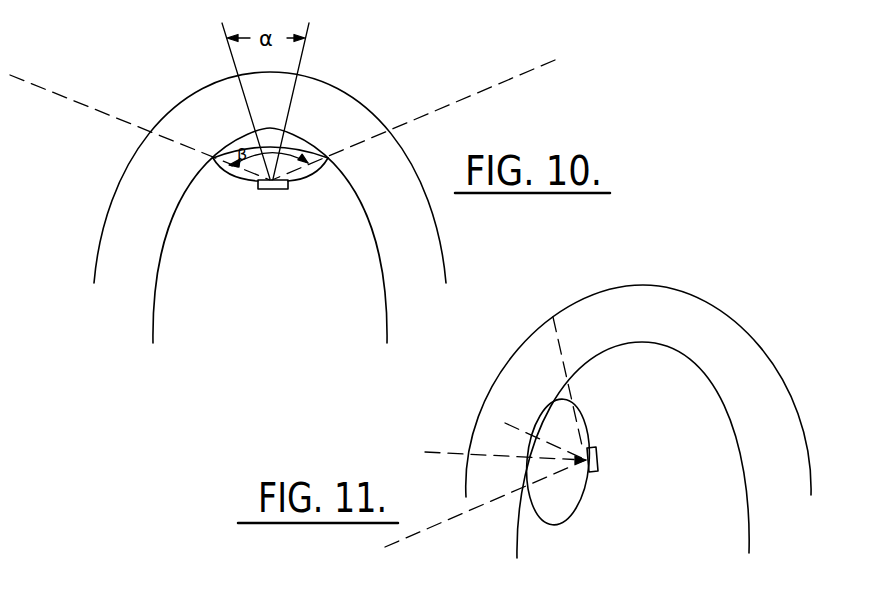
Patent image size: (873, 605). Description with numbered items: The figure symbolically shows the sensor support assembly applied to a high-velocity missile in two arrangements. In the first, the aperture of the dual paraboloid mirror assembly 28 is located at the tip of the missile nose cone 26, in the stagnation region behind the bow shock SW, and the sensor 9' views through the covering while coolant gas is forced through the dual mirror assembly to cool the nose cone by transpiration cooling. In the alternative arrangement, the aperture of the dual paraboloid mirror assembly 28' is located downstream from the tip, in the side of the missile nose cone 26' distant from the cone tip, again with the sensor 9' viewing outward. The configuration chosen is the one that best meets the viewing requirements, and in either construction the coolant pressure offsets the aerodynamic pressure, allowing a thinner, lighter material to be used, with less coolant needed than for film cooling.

In FIG. 10, the bow shock SW is at (118, 188).
In FIG. 11, the bow shock SW is at (625, 285).
In FIG. 10, the missile nose cone 26 is at (250, 235).
In FIG. 10, the dual paraboloid mirror assembly 28 is at (256, 202).
In FIG. 10, the sensor 9' is at (260, 204).
In FIG. 11, the sensor 9' is at (611, 468).
In FIG. 11, the missile nose cone 26' is at (603, 452).
In FIG. 11, the dual paraboloid mirror assembly 28' is at (583, 471).